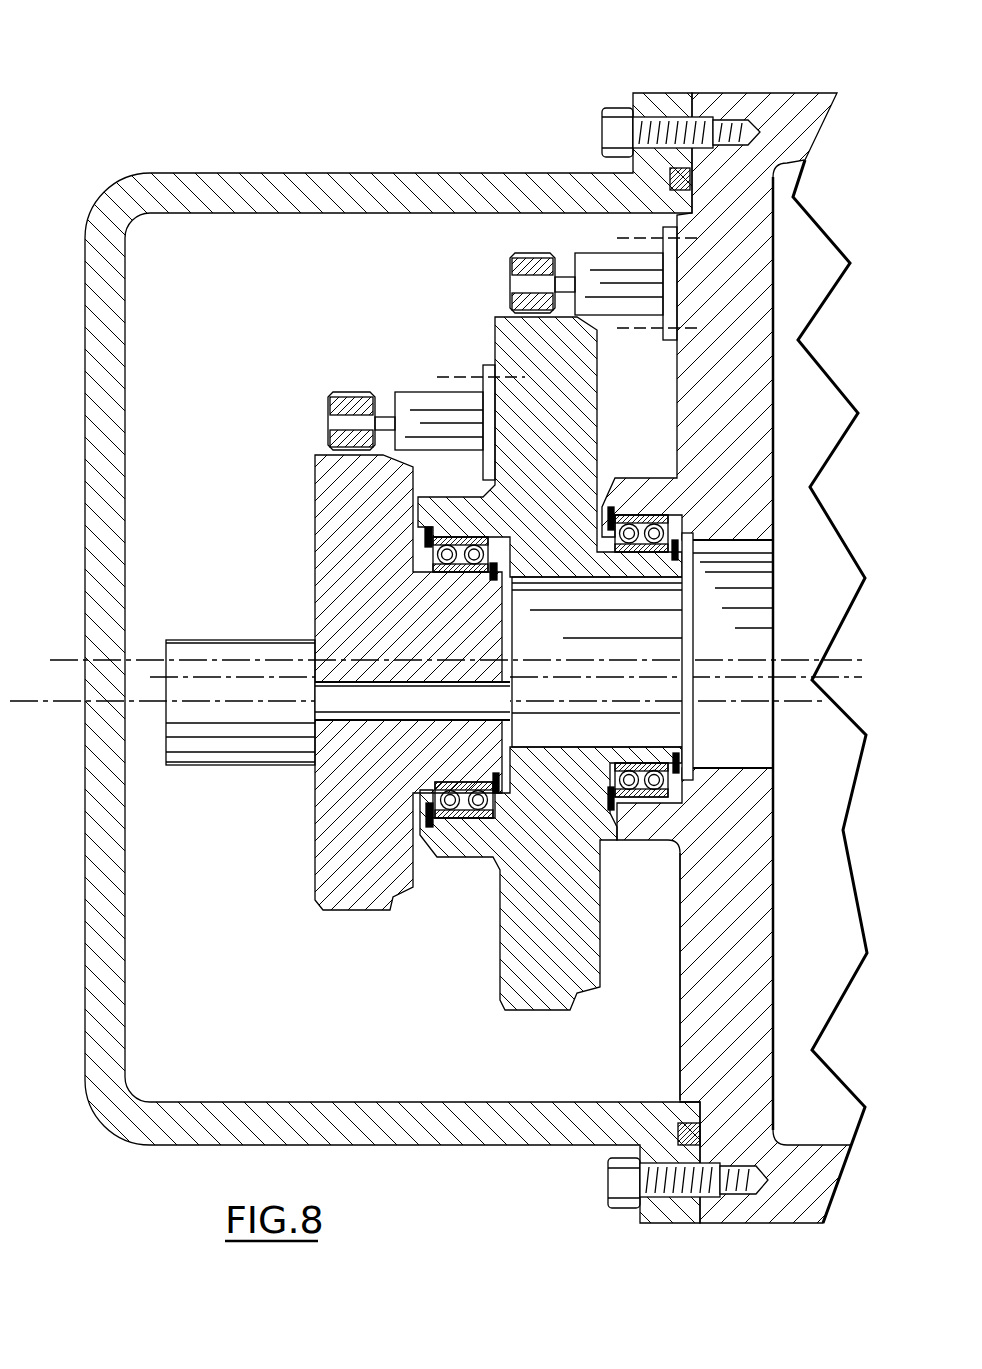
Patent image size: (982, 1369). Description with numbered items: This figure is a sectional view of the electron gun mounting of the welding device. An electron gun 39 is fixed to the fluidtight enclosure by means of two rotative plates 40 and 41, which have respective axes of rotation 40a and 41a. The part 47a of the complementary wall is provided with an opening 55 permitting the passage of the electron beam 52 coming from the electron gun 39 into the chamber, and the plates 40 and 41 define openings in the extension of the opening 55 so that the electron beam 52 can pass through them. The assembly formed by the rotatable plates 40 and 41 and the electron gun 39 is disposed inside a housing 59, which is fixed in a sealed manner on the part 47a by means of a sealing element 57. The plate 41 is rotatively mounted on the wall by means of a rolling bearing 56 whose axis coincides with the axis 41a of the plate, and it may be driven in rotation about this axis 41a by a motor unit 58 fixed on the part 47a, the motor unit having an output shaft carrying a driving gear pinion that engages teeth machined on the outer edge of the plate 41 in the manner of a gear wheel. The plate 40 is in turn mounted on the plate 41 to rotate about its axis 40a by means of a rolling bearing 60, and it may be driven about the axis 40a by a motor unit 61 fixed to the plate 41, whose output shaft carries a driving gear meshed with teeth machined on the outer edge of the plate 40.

The electron gun 39 is at (254, 742).
The rotative plate 40 is at (340, 555).
The axis of rotation 40a is at (860, 680).
The rotative plate 41 is at (563, 458).
The axis of rotation 41a is at (790, 655).
The part of the complementary wall 47a is at (790, 110).
The electron beam 52 is at (793, 700).
The opening 55 is at (767, 758).
The rolling bearing 56 is at (628, 533).
The sealing element 57 is at (680, 1122).
The motor unit 58 is at (551, 231).
The housing 59 is at (275, 197).
The rolling bearing 60 is at (443, 550).
The motor unit 61 is at (378, 378).